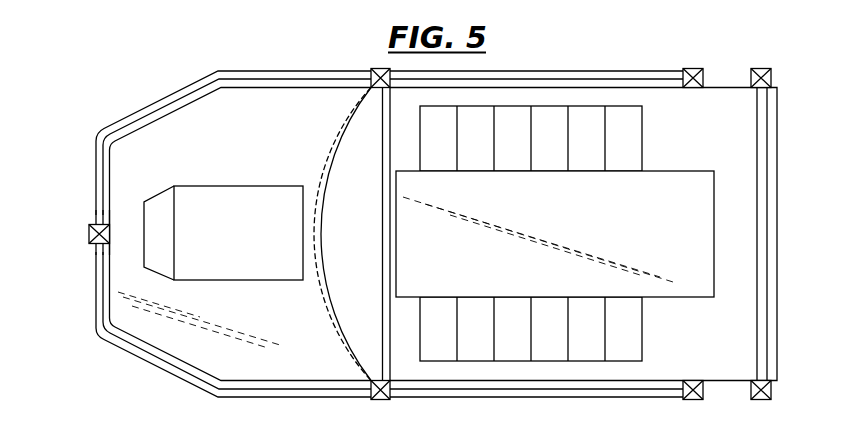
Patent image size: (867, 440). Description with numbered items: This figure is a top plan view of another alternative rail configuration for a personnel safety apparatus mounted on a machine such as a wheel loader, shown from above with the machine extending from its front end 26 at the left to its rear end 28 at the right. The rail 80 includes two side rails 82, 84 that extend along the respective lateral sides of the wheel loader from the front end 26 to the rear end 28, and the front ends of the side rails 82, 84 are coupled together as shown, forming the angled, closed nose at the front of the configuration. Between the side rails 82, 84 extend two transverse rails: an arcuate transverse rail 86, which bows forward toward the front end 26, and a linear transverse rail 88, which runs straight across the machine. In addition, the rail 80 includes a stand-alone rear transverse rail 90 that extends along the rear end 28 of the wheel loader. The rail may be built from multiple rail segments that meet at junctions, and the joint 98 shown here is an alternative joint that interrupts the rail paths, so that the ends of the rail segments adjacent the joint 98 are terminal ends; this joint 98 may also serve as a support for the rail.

The front end 26 is at (108, 306).
The rear end 28 is at (778, 120).
The rail 80 is at (279, 66).
The side rail 82 is at (311, 400).
The side rail 84 is at (348, 66).
The arcuate transverse rail 86 is at (323, 178).
The linear transverse rail 88 is at (387, 207).
The rear transverse rail 90 is at (760, 250).
The joint 98 is at (387, 398).